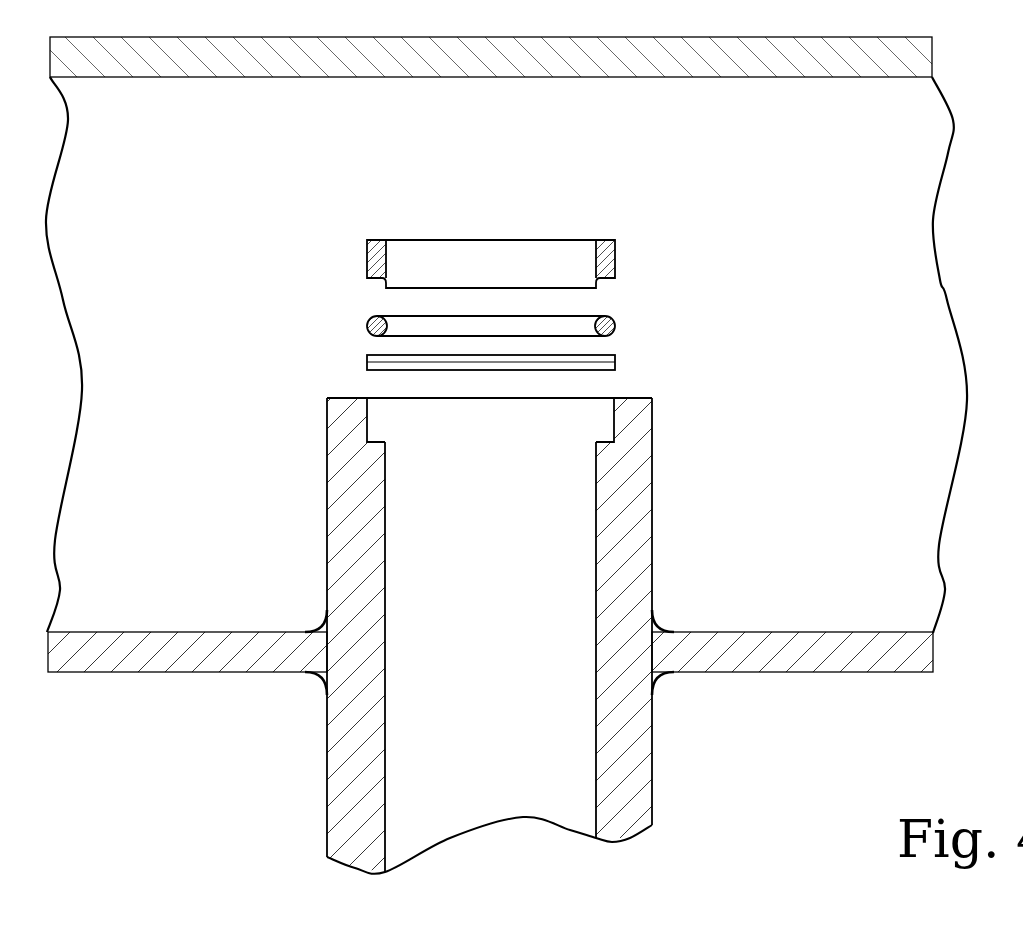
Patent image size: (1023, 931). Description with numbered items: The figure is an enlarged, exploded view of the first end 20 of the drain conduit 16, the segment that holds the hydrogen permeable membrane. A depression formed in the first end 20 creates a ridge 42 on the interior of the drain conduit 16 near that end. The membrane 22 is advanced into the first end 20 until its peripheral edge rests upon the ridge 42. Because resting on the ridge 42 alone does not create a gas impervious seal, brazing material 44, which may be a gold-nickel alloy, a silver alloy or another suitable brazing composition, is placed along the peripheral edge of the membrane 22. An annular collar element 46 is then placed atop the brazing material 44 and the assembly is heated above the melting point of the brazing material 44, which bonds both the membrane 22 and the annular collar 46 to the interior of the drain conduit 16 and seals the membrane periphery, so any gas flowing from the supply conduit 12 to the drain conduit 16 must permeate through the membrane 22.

The supply conduit 12 is at (853, 77).
The drain conduit 16 is at (652, 767).
The first end 20 is at (534, 621).
The membrane 22 is at (367, 365).
The ridge 42 is at (380, 442).
The brazing material 44 is at (616, 327).
The annular collar element 46 is at (616, 261).